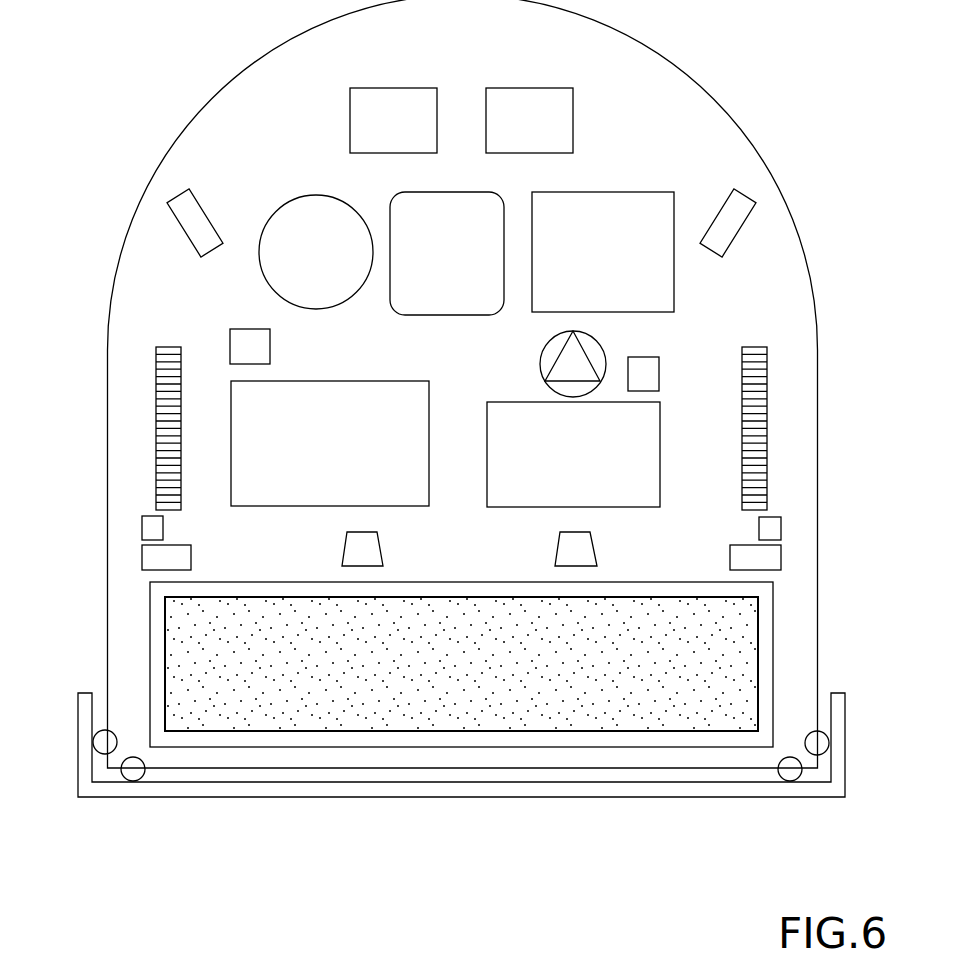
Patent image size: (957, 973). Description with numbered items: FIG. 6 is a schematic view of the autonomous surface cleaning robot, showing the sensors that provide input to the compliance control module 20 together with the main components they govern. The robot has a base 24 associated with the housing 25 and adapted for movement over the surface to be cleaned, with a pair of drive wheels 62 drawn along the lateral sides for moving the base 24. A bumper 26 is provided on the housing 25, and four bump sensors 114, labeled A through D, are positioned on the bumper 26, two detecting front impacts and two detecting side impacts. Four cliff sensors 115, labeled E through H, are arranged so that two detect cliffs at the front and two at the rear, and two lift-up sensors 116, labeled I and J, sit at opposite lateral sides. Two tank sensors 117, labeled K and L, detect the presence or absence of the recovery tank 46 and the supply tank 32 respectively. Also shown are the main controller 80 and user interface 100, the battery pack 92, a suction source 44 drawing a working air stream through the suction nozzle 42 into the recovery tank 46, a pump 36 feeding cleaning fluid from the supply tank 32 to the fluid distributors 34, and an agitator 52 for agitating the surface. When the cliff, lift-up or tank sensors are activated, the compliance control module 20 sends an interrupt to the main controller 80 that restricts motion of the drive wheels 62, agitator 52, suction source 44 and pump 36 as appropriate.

The compliance control module 20 is at (498, 92).
The base 24 is at (700, 118).
The housing 25 is at (127, 252).
The bumper 26 is at (312, 790).
The supply tank 32 is at (495, 497).
The fluid distributor 34 is at (349, 553).
The pump 36 is at (545, 346).
The suction nozzle 42 is at (461, 748).
The suction source 44 is at (305, 205).
The recovery tank 46 is at (414, 387).
The agitator 52 is at (240, 730).
The drive wheels 62 is at (172, 352).
The main controller 80 is at (363, 90).
The battery pack 92 is at (660, 193).
The user interface 100 is at (480, 195).
The bump sensors 114 is at (93, 748).
The cliff sensors 115 is at (186, 212).
The lift-up sensors 116 is at (165, 540).
The tank sensors 117 is at (243, 335).